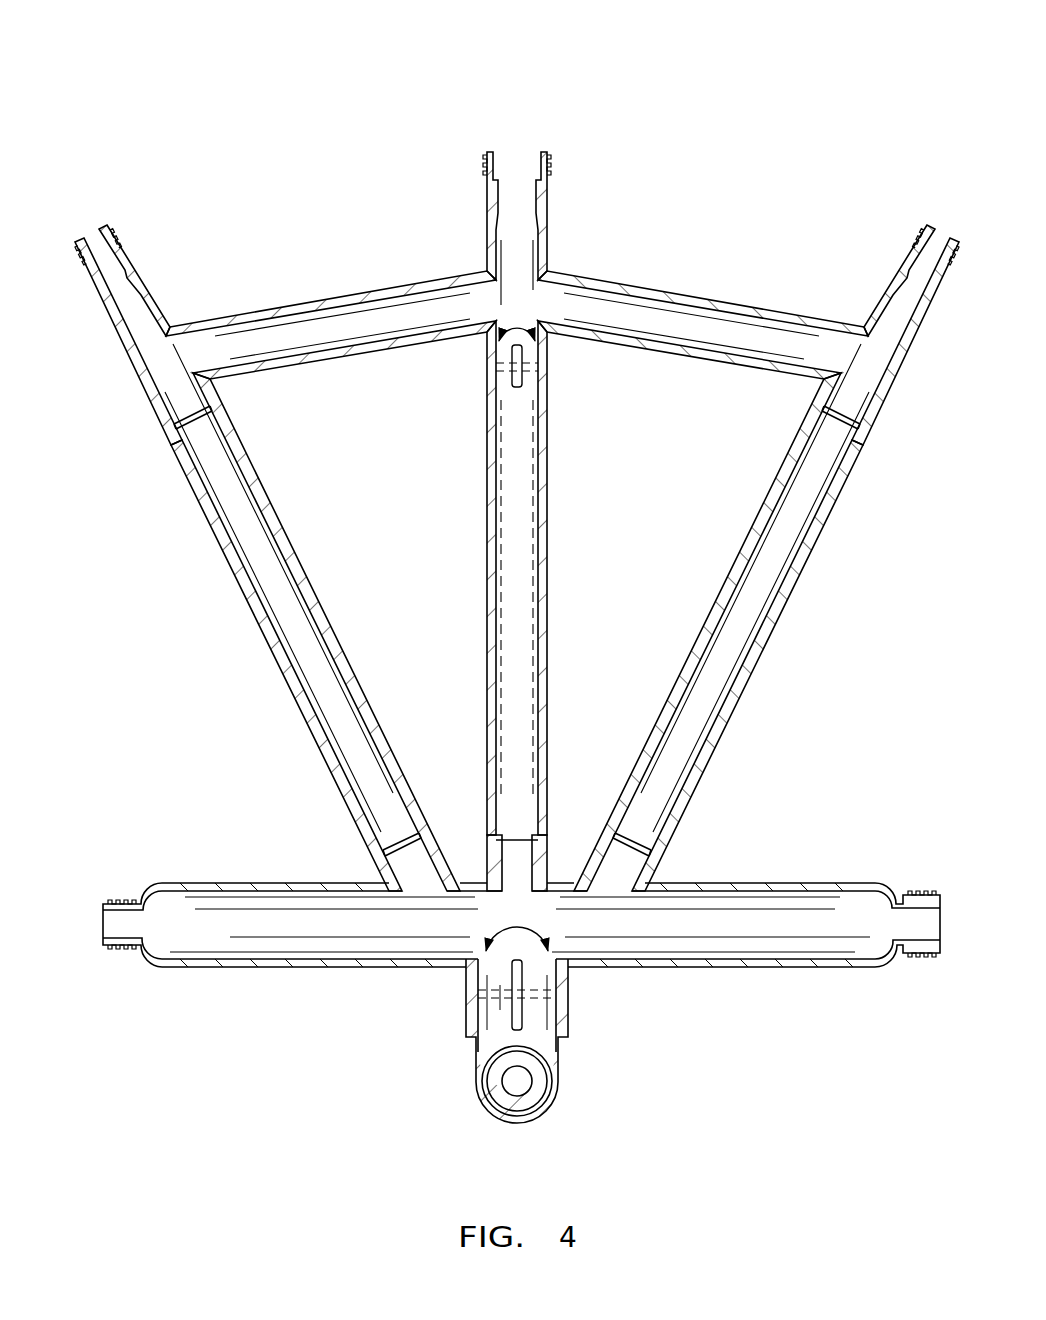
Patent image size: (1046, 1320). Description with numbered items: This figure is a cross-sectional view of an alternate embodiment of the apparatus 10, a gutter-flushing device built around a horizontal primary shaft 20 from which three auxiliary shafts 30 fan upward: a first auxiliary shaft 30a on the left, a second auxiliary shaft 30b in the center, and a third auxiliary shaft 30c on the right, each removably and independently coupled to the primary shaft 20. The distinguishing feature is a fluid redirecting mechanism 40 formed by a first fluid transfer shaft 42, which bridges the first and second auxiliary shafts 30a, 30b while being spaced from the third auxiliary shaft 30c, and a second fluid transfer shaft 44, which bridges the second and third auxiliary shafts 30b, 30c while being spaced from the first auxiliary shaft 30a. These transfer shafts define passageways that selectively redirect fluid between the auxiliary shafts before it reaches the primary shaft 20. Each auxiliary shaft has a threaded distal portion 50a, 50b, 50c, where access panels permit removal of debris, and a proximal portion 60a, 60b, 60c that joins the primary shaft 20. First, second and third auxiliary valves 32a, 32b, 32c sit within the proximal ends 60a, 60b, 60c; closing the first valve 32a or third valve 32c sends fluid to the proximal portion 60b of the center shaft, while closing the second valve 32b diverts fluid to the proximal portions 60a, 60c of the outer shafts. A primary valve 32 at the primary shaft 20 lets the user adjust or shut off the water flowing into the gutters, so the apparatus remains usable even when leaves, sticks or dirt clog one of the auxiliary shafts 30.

The apparatus 10 is at (236, 135).
The primary shaft 20 is at (798, 948).
The auxiliary shafts 30 is at (444, 554).
The first auxiliary shaft 30a is at (265, 617).
The second auxiliary shaft 30b is at (537, 606).
The third auxiliary shaft 30c is at (725, 617).
The primary valve 32 is at (478, 1005).
The first auxiliary valve 32a is at (170, 420).
The second auxiliary valve 32b is at (524, 376).
The third auxiliary valve 32c is at (828, 420).
The fluid redirecting mechanism 40 is at (384, 238).
The first fluid transfer shaft 42 is at (277, 333).
The second fluid transfer shaft 44 is at (757, 333).
The distal portion of first auxiliary shaft 50a is at (100, 230).
The distal end of second auxiliary shaft 50b is at (528, 150).
The distal portion of third auxiliary shaft 50c is at (934, 222).
The proximal end of first auxiliary passageway 60a is at (401, 834).
The proximal portion of second auxiliary shaft 60b is at (512, 835).
The proximal end of third auxiliary passageway 60c is at (636, 834).